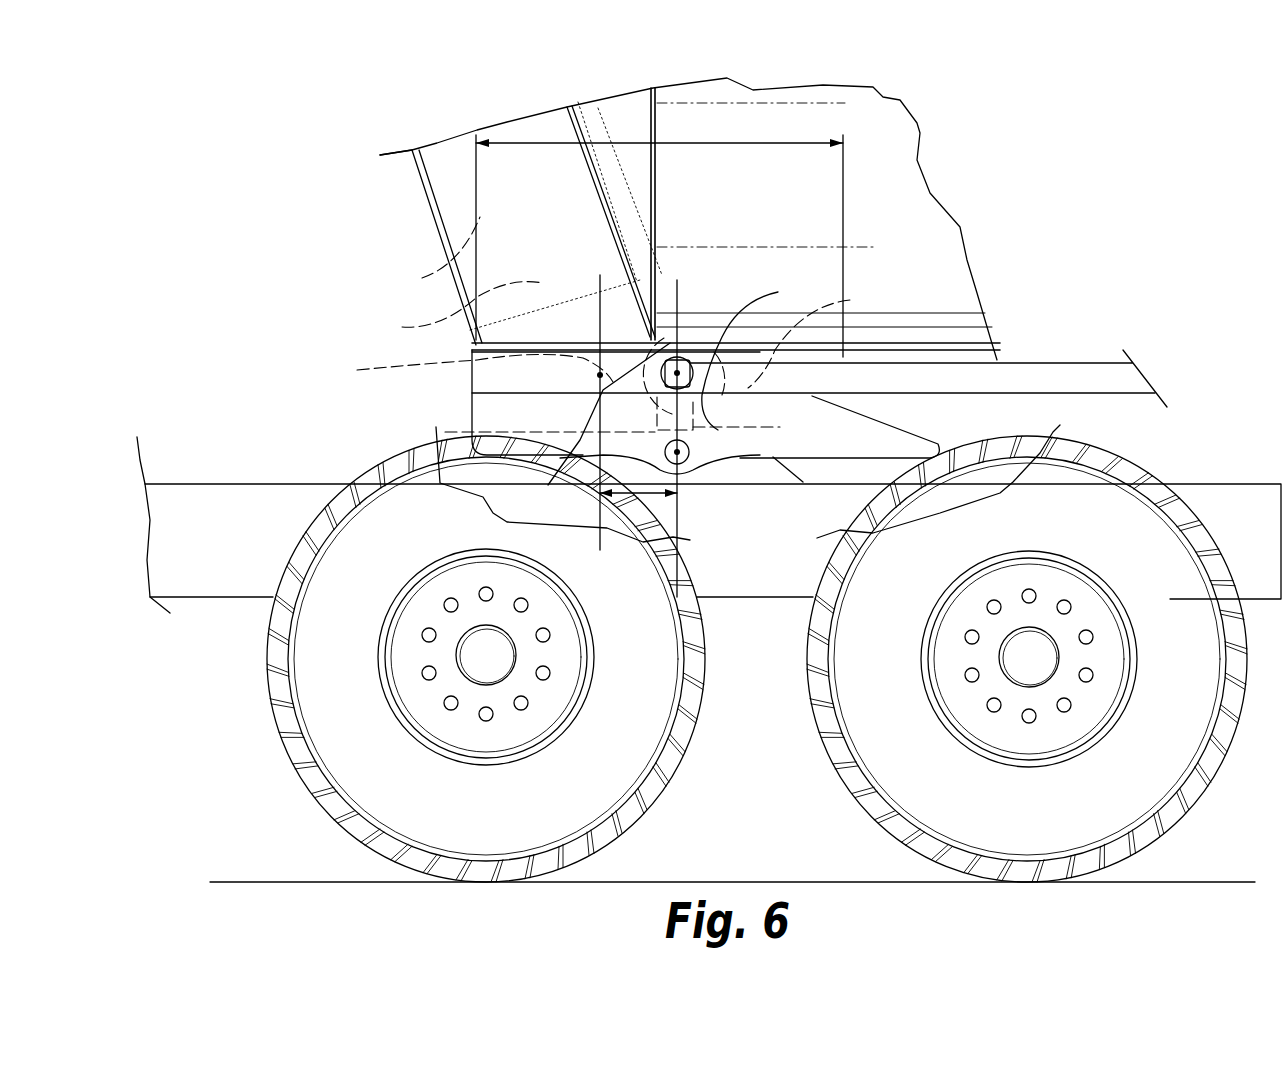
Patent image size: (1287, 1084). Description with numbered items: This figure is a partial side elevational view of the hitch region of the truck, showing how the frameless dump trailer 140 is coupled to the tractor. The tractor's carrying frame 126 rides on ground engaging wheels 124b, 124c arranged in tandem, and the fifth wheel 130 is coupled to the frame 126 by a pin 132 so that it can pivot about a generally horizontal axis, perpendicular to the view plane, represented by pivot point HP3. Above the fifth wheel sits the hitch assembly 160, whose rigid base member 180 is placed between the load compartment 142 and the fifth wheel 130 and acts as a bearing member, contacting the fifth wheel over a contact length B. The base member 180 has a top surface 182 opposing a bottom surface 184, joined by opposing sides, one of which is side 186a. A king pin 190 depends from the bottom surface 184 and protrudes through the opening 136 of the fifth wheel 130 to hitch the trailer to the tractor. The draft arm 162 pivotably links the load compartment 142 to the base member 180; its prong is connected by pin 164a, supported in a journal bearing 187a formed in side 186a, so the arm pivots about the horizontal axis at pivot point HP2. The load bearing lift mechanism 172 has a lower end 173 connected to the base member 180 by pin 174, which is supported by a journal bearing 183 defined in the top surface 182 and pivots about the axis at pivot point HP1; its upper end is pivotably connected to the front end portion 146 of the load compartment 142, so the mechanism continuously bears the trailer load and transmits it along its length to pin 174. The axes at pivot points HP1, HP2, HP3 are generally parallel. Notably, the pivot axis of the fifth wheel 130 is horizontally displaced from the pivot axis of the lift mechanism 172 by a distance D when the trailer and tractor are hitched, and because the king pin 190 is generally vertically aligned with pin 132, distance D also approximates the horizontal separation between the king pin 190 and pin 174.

The ground engaging wheel 124b is at (262, 752).
The ground engaging wheel 124c is at (812, 718).
The carrying frame 126 is at (217, 597).
The fifth wheel 130 is at (910, 436).
The pin 132 is at (687, 435).
The opening 136 is at (690, 345).
The frameless dump trailer 140 is at (398, 160).
The load compartment 142 is at (873, 178).
The front end portion 146 is at (422, 190).
The hitch assembly 160 is at (353, 345).
The draft arm 162 is at (1053, 363).
The pin 164a is at (685, 381).
The lift mechanism 172 is at (521, 221).
The lower end 173 is at (454, 311).
The pin 174 is at (466, 371).
The base member 180 is at (477, 388).
The top surface 182 is at (845, 348).
The journal bearing 183 is at (433, 433).
The bottom surface 184 is at (815, 400).
The side 186a is at (534, 394).
The journal bearing 187a is at (693, 390).
The king pin 190 is at (765, 349).
The pivot point HP1 is at (603, 372).
The pivot point HP2 is at (687, 335).
The pivot point HP3 is at (677, 452).
The contact length B is at (733, 143).
The distance D is at (637, 497).